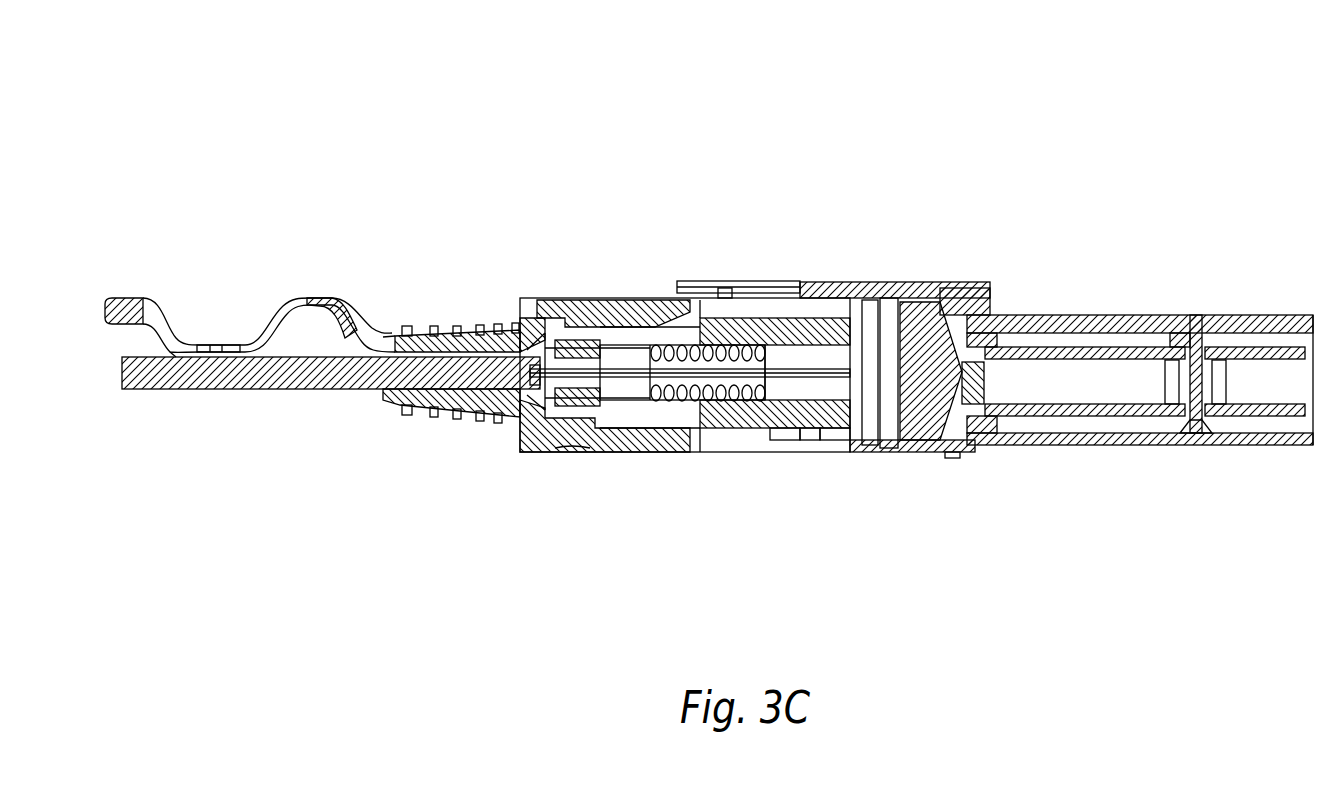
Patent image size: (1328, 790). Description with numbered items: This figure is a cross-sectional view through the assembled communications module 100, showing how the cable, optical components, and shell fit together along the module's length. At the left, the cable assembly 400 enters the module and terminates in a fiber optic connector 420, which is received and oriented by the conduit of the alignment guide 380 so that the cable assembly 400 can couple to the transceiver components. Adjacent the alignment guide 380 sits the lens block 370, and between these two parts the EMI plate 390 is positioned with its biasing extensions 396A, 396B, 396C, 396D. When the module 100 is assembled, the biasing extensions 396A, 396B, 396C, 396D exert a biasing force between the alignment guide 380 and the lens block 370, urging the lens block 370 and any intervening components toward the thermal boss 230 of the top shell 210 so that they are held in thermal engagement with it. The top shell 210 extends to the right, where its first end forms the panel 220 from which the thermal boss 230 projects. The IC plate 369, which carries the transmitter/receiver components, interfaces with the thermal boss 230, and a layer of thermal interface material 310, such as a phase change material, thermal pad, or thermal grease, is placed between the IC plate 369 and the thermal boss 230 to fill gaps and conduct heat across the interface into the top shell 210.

The communications module 100 is at (525, 104).
The cable assembly 400 is at (194, 399).
The fiber optic connector 420 is at (812, 350).
The alignment guide 380 is at (727, 297).
The lens block 370 is at (870, 298).
The biasing extension 396A is at (862, 330).
The thermal boss 230 is at (930, 297).
The EMI plate 390 is at (786, 432).
The biasing extension 396C is at (832, 438).
The biasing extension 396B is at (894, 481).
The biasing extension 396D is at (803, 440).
The integrated circuit plate 369 is at (938, 450).
The top shell 210 is at (1140, 367).
The panel 220 is at (1163, 315).
The thermal interface material 310 is at (1003, 447).